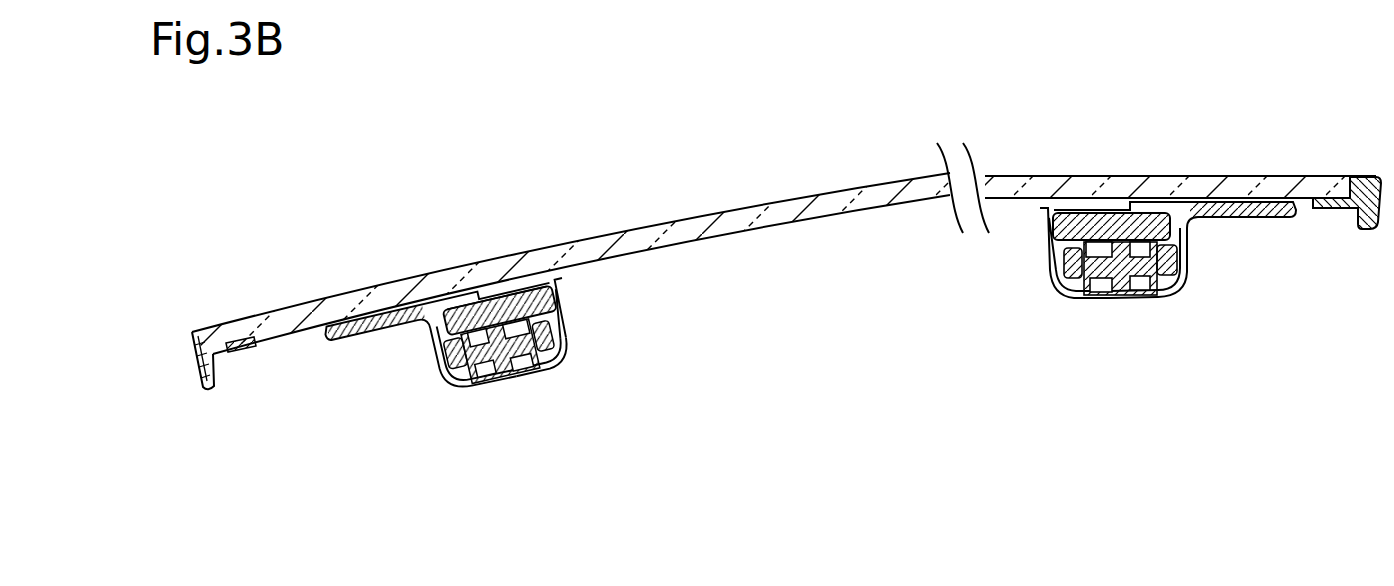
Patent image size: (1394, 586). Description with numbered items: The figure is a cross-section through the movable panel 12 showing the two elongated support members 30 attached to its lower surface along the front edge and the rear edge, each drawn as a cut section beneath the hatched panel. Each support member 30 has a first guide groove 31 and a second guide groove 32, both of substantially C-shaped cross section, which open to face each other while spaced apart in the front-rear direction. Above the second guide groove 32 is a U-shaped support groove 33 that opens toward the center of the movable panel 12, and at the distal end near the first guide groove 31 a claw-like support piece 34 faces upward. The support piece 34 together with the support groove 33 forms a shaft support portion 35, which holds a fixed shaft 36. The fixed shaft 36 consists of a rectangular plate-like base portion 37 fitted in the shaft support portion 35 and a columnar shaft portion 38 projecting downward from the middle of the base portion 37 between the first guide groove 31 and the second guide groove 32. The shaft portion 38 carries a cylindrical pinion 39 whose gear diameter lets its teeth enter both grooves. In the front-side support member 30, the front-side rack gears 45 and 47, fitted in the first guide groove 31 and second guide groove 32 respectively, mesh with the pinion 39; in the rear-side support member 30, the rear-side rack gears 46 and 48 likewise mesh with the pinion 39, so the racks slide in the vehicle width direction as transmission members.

The movable panel 12 is at (817, 195).
The support member 30 is at (810, 276).
The first guide groove 31 is at (562, 343).
The second guide groove 32 is at (437, 370).
The support groove 33 is at (433, 323).
The support piece 34 is at (573, 293).
The shaft support portion 35 is at (525, 281).
The fixed shaft 36 is at (803, 209).
The base portion 37 is at (447, 309).
The shaft portion 38 is at (474, 307).
The pinion 39 is at (490, 383).
The front-side rack gear 45 is at (543, 377).
The rear-side rack gear 46 is at (1077, 290).
The front-side rack gear 47 is at (457, 377).
The rear-side rack gear 48 is at (1173, 280).